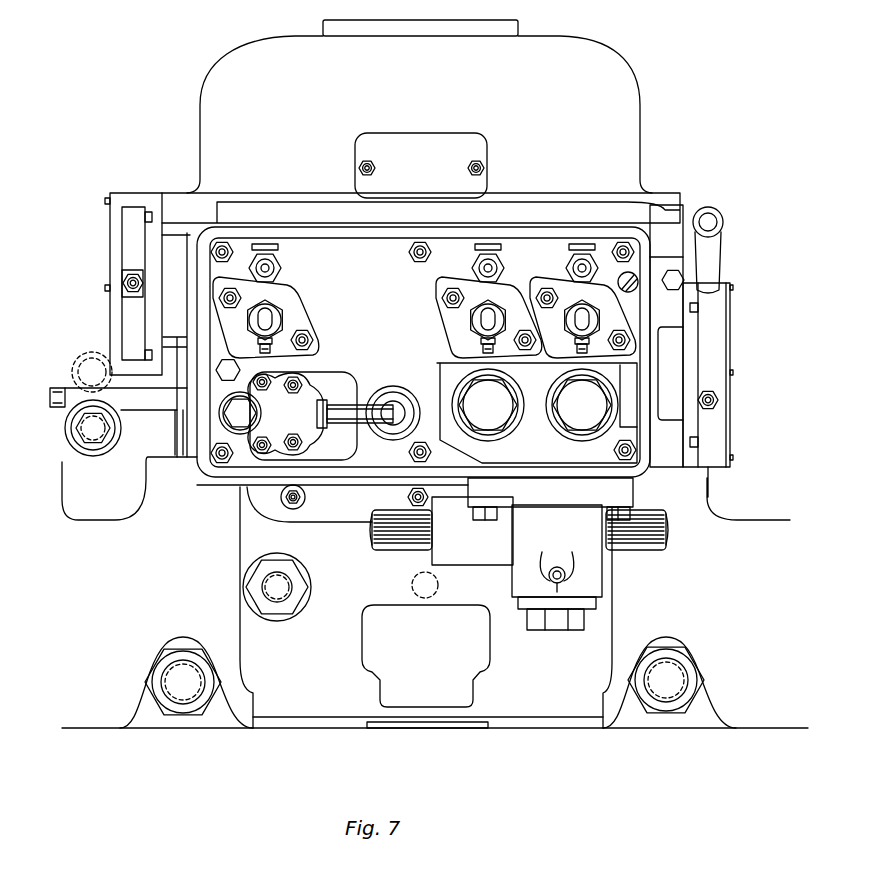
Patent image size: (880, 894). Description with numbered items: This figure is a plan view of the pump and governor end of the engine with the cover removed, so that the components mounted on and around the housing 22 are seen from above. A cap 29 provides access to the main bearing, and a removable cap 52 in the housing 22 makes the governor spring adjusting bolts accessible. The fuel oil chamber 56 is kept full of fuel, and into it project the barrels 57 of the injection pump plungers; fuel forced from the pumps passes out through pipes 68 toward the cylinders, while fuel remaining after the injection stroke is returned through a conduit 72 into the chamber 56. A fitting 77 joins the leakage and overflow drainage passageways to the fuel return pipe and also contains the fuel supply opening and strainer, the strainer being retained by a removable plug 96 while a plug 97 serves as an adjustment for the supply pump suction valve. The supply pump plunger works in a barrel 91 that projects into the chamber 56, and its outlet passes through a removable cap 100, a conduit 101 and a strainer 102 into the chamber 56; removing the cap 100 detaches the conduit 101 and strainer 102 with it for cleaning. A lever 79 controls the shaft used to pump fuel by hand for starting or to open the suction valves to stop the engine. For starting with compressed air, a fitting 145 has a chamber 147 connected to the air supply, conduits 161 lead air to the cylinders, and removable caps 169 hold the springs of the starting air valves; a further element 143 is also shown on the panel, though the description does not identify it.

The housing 22 is at (419, 106).
The cap 29 is at (426, 656).
The removable cap 52 is at (421, 165).
The fuel oil chamber 56 is at (423, 352).
The barrel 57 is at (283, 317).
The pipe 68 is at (281, 267).
The conduit 72 is at (262, 349).
The fitting 77 is at (77, 386).
The lever 79 is at (126, 281).
The barrel 91 is at (312, 394).
The removable plug 96 is at (88, 446).
The plug 97 is at (240, 413).
The removable cap 100 is at (285, 414).
The conduit 101 is at (352, 404).
The strainer 102 is at (398, 398).
The bolt 143 is at (413, 491).
The fitting 145 is at (557, 567).
The chamber 147 is at (667, 513).
The conduit 161 is at (396, 552).
The removable cap 169 is at (535, 405).